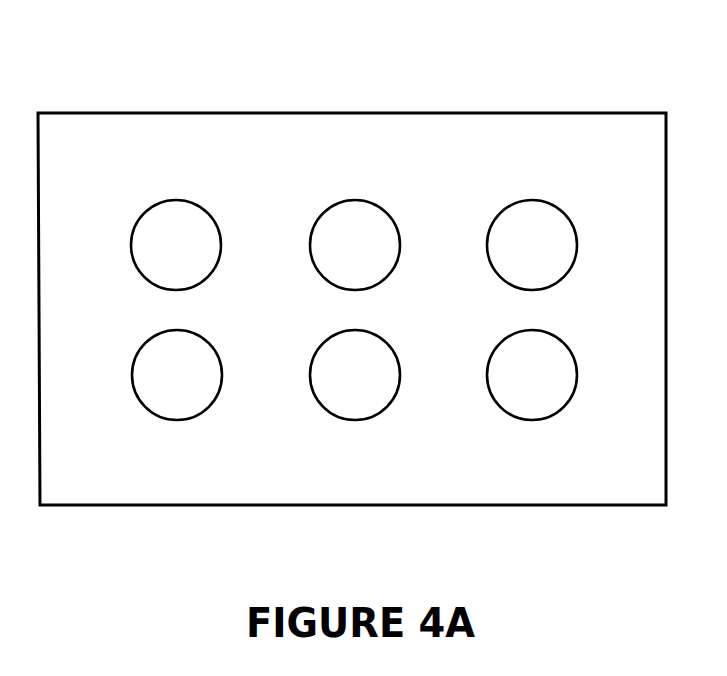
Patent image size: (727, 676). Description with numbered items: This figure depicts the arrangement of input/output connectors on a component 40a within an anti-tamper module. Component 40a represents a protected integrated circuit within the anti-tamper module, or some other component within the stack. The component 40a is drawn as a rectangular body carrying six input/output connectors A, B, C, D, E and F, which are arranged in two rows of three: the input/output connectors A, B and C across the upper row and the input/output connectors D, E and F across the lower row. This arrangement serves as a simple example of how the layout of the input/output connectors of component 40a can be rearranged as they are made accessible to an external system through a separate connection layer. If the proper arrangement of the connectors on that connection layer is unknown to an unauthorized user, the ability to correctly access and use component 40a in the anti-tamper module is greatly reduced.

The component 40a is at (617, 138).
The input/output connector A is at (176, 245).
The input/output connector B is at (355, 245).
The input/output connector C is at (532, 245).
The input/output connector D is at (177, 375).
The input/output connector E is at (355, 375).
The input/output connector F is at (532, 375).